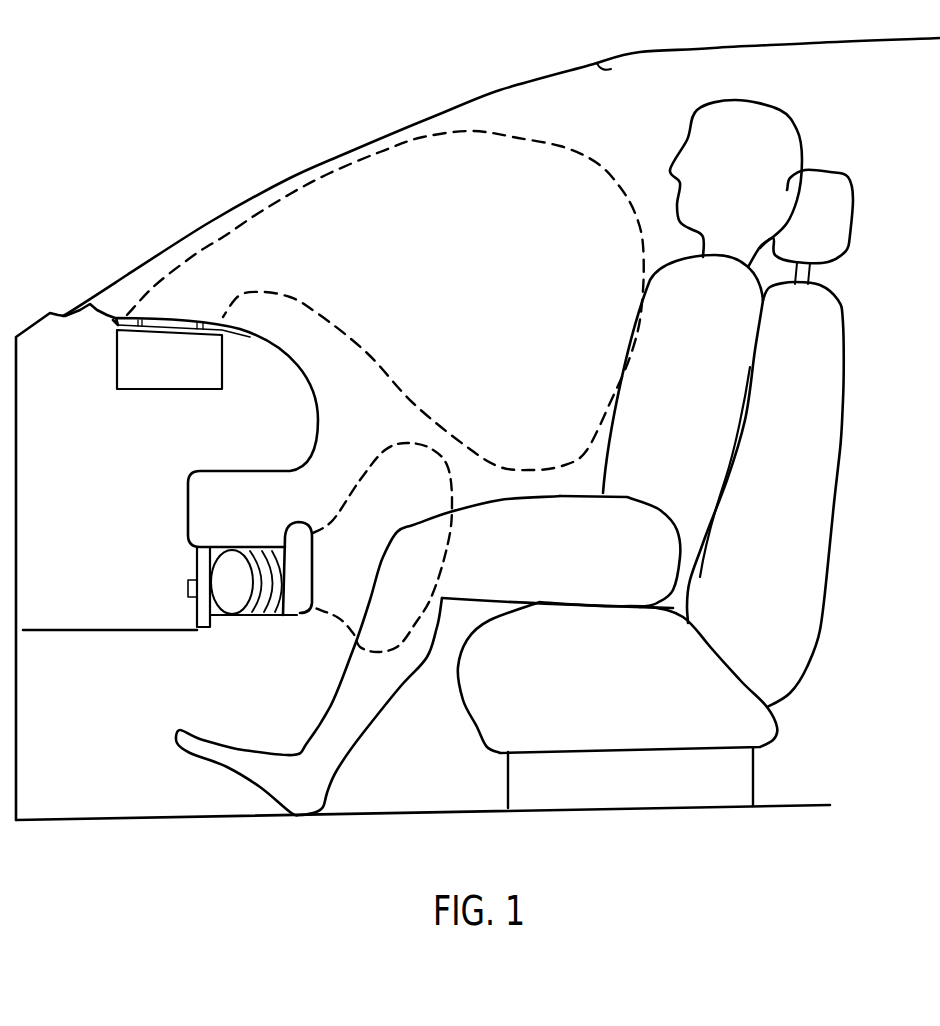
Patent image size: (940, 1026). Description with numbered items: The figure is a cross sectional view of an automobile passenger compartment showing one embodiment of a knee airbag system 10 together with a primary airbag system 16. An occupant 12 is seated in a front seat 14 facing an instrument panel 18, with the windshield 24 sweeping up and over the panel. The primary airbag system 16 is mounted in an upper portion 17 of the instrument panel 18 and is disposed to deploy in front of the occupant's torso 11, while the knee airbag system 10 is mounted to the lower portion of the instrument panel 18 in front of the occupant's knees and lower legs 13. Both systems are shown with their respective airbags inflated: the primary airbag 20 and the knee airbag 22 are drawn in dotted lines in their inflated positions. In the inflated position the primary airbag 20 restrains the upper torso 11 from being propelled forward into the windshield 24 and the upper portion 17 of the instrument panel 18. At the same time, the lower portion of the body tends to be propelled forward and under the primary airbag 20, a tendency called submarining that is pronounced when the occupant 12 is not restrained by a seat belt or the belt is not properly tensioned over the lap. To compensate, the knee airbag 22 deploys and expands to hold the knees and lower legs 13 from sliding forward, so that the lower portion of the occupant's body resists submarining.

The knee airbag system 10 is at (322, 490).
The occupant's torso 11 is at (705, 387).
The occupant 12 is at (836, 138).
The knees and lower legs 13 is at (535, 557).
The front seat 14 is at (817, 443).
The primary airbag system 16 is at (142, 375).
The upper portion of the instrument panel 17 is at (260, 387).
The instrument panel 18 is at (110, 520).
The primary airbag 20 is at (558, 163).
The knee airbag 22 is at (417, 495).
The windshield 24 is at (427, 118).